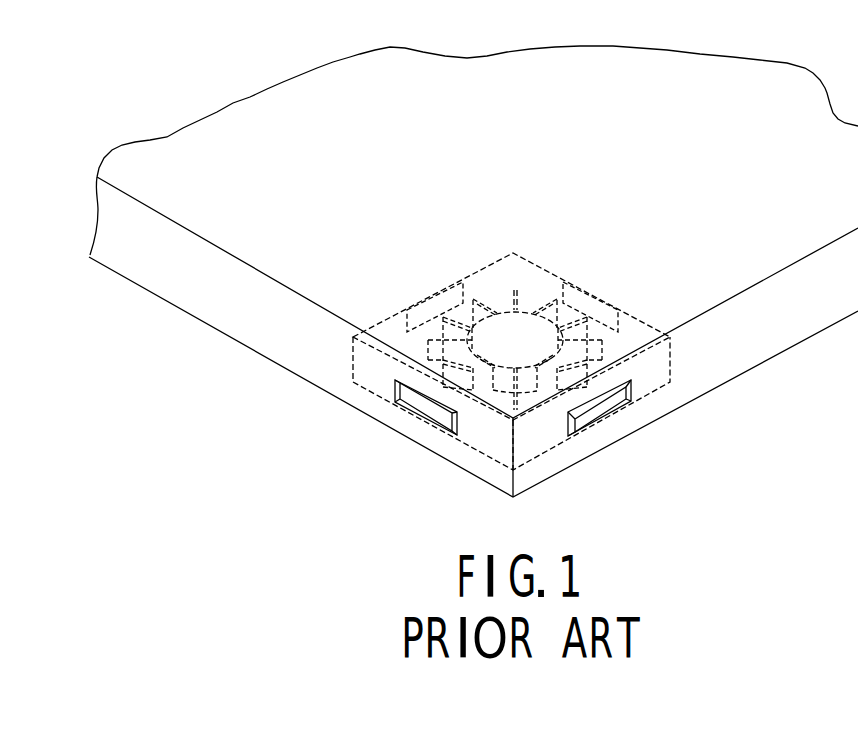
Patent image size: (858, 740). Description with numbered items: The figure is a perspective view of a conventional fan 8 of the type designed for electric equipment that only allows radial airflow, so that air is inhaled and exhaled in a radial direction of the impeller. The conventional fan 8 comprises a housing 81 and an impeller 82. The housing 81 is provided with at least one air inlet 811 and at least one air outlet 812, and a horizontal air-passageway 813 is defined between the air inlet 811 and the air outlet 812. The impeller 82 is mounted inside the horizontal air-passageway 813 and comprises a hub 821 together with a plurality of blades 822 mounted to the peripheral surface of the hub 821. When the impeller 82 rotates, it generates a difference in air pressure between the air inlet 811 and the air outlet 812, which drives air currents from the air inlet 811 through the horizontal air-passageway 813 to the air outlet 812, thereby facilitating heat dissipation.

The conventional fan 8 is at (714, 352).
The housing 81 is at (673, 375).
The air inlet 811 is at (605, 407).
The air outlet 812 is at (417, 402).
The horizontal air-passageway 813 is at (530, 405).
The impeller 82 is at (512, 251).
The hub 821 is at (500, 323).
The blades 822 is at (548, 305).